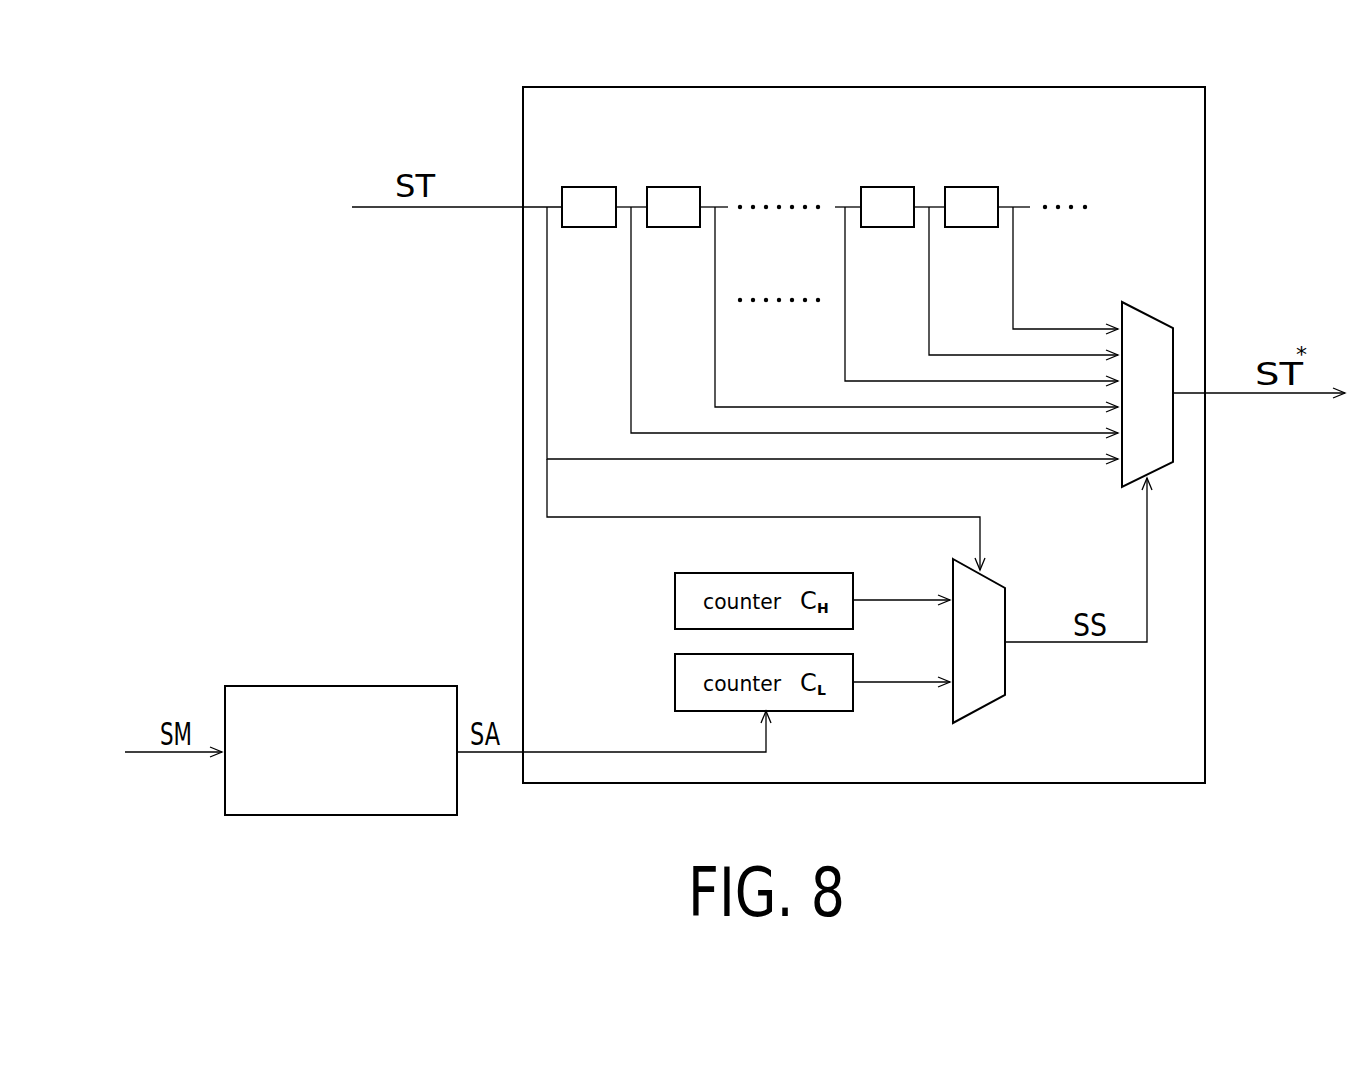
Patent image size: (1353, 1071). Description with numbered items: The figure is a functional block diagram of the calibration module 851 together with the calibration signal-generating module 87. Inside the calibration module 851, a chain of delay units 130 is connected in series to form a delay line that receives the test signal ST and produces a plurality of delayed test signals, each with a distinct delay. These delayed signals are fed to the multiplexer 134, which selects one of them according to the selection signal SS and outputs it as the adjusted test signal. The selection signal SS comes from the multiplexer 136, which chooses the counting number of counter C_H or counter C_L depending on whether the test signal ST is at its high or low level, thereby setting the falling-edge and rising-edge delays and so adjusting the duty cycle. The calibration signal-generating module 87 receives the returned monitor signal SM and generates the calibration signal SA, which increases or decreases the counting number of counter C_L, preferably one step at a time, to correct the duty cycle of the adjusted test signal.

The calibration module 851 is at (917, 87).
The delay units 130 is at (1002, 176).
The multiplexer 134 is at (1150, 310).
The multiplexer 136 is at (980, 710).
The calibration signal-generating module 87 is at (368, 686).